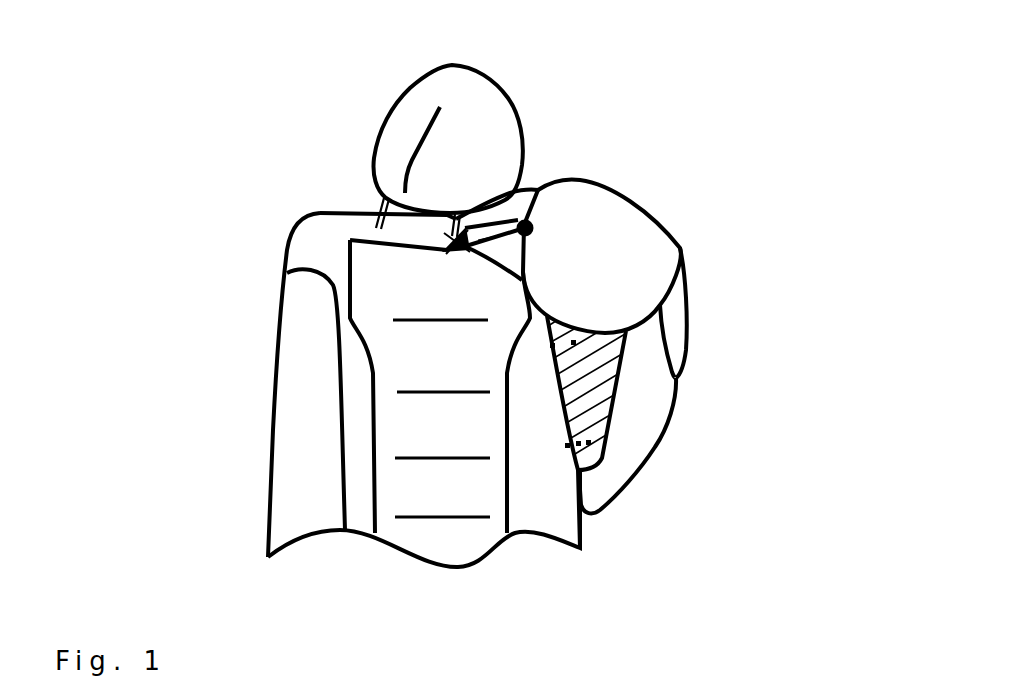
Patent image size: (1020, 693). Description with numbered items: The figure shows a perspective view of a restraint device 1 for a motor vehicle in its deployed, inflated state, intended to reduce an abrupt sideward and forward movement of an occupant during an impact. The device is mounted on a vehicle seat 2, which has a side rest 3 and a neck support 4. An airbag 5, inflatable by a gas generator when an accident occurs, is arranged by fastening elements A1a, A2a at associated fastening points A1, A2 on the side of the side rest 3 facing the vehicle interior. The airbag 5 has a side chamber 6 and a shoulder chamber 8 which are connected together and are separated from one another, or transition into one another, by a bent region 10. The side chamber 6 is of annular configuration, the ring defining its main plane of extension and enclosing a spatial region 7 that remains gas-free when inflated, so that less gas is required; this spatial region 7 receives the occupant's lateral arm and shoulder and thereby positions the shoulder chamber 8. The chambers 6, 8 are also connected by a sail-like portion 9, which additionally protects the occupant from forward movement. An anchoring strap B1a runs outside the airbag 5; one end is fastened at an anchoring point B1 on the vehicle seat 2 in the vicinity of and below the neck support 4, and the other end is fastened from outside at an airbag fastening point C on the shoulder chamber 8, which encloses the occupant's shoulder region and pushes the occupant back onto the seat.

The restraint device 1 is at (722, 62).
The vehicle seat 2 is at (452, 501).
The side rest 3 is at (297, 361).
The neck support 4 is at (475, 157).
The airbag 5 is at (745, 197).
The side chamber 6 is at (628, 447).
The spatial region 7 is at (590, 417).
The shoulder chamber 8 is at (610, 257).
The sail-like portion 9 is at (673, 343).
The bent region 10 is at (673, 290).
The fastening point A1 is at (567, 447).
The fastening element A1a is at (588, 443).
The fastening point A2 is at (573, 342).
The fastening element A2a is at (552, 345).
The anchoring point B1 is at (456, 240).
The anchoring strap B1a is at (500, 236).
The airbag fastening point C is at (531, 222).